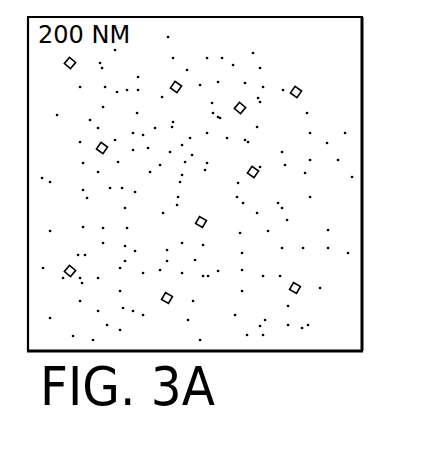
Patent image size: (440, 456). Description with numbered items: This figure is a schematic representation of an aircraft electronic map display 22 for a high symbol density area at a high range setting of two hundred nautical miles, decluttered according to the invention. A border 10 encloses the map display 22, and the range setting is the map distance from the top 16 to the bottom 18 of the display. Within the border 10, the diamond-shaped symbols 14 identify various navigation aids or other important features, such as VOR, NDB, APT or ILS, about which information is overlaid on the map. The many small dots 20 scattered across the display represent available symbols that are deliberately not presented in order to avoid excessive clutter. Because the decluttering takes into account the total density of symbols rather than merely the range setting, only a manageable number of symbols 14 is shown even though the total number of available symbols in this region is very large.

The border 10 is at (362, 113).
The symbols 14 is at (262, 176).
The top 16 is at (330, 17).
The bottom 18 is at (333, 351).
The small dots 20 is at (356, 205).
The map display 22 is at (270, 364).